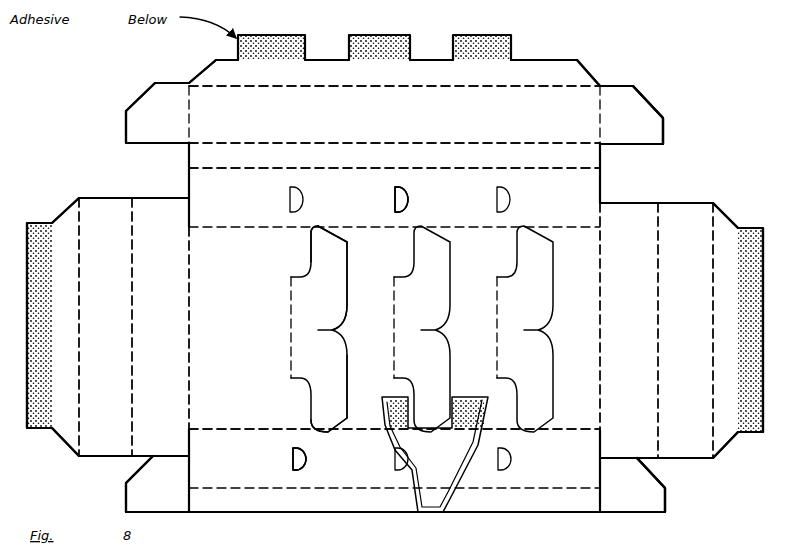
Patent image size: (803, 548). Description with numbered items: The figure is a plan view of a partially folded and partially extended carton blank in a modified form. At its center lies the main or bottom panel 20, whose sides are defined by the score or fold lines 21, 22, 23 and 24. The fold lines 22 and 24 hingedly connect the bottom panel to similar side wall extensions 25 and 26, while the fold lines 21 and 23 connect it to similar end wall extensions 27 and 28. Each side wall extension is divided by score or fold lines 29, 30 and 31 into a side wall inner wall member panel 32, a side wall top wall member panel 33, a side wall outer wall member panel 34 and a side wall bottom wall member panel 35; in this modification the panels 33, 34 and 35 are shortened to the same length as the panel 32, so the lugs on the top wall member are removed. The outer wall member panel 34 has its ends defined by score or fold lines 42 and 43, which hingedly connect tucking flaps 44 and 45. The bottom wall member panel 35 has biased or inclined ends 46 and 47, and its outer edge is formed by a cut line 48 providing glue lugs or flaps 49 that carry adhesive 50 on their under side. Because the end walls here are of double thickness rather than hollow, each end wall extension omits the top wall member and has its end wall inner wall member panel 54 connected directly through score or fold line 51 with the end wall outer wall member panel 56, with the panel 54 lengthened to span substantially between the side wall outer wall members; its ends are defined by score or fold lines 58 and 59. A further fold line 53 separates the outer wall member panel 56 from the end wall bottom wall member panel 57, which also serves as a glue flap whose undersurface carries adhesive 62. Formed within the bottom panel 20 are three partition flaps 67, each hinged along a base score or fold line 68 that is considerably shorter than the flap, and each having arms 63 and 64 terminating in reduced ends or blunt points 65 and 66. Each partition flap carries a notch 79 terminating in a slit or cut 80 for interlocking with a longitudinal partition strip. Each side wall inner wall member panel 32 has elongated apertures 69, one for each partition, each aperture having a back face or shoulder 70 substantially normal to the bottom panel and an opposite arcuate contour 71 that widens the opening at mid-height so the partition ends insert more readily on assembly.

The main or bottom panel 20 is at (395, 286).
The score or fold line 21 is at (190, 375).
The score or fold line 22 is at (466, 232).
The score or fold line 23 is at (598, 366).
The score or fold line 24 is at (588, 430).
The side wall extension 25 is at (660, 68).
The side wall extension 26 is at (686, 511).
The end wall extension 27 is at (72, 178).
The end wall extension 28 is at (732, 198).
The score or fold line 29 is at (346, 172).
The score or fold line 30 is at (298, 144).
The score or fold line 31 is at (392, 88).
The side wall inner wall member panel 32 is at (560, 162).
The side wall top wall member panel 33 is at (512, 148).
The side wall outer wall member panel 34 is at (436, 92).
The side wall bottom wall member panel 35 is at (546, 64).
The score or fold line 42 is at (190, 118).
The score or fold line 43 is at (598, 134).
The tucking flap 44 is at (170, 95).
The tucking flap 45 is at (650, 130).
The biased or inclined end 46 is at (205, 68).
The biased or inclined end 47 is at (588, 72).
The cut line 48 is at (333, 61).
The glue lugs or flaps 49 is at (275, 36).
The adhesive 50 is at (358, 40).
The score or fold line 51 is at (133, 256).
The score or fold line 53 is at (78, 298).
The end wall inner wall member panel 54 is at (189, 290).
The end wall outer wall member panel 56 is at (134, 402).
The end wall bottom wall member panel 57 is at (72, 360).
The score or fold line 58 is at (143, 200).
The score or fold line 59 is at (152, 457).
The adhesive 62 is at (30, 225).
The arm of partition flap 63 is at (312, 250).
The arm of partition flap 64 is at (338, 410).
The reduced end or blunt point 65 is at (322, 226).
The reduced end or blunt point 66 is at (326, 432).
The partition flap 67 is at (336, 300).
The score or fold line 68 is at (291, 338).
The elongated aperture 69 is at (404, 194).
The back face or shoulder 70 is at (394, 204).
The arcuate contour 71 is at (405, 196).
The notch 79 is at (444, 330).
The slit or cut 80 is at (530, 332).